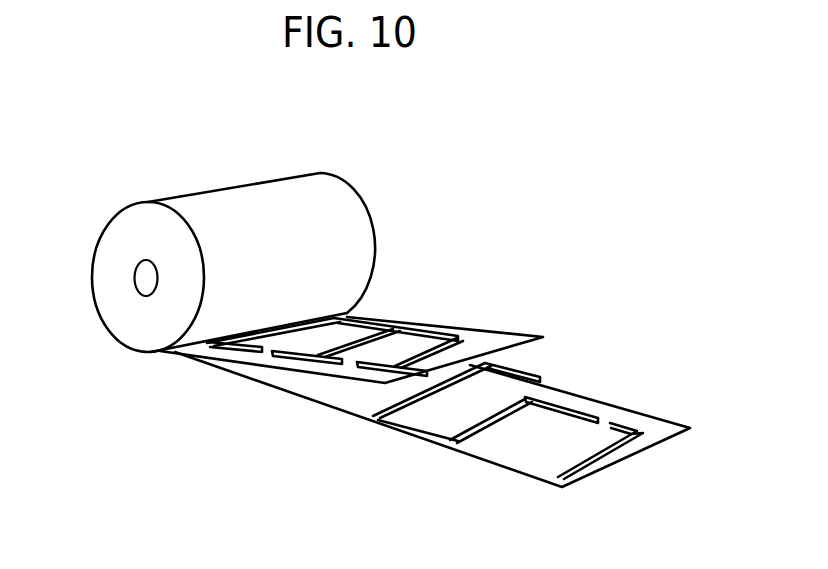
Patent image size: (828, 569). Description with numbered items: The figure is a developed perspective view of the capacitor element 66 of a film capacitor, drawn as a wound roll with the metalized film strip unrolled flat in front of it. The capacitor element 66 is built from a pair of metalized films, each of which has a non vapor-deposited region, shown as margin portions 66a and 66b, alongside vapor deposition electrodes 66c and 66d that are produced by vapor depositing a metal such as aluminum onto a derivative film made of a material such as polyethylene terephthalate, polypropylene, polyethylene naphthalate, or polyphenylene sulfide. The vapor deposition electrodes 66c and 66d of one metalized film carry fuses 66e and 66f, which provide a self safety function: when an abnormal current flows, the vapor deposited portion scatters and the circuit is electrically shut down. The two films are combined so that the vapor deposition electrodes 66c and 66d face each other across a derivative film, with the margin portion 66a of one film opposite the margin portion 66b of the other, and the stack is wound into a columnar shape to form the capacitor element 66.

The capacitor element 66 is at (237, 186).
The margin portion 66a is at (506, 336).
The margin portion 66b is at (465, 451).
The vapor deposition electrode 66c is at (412, 340).
The vapor deposition electrode 66d is at (560, 430).
The fuse 66e is at (343, 367).
The fuse 66f is at (607, 422).